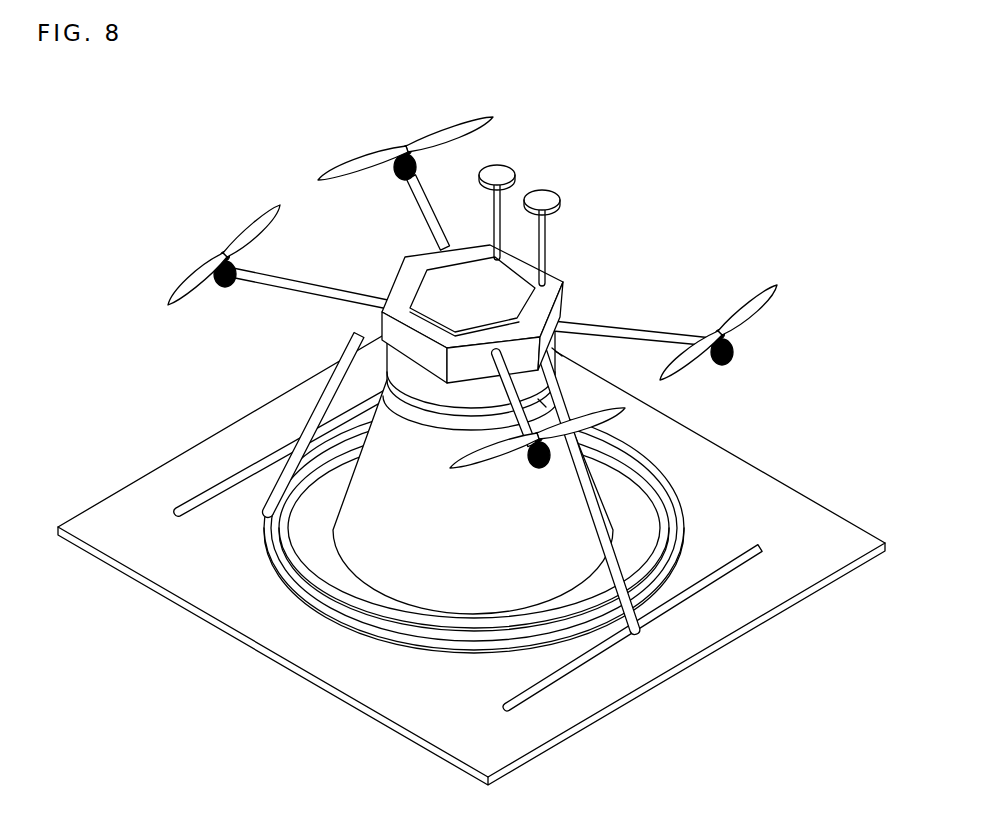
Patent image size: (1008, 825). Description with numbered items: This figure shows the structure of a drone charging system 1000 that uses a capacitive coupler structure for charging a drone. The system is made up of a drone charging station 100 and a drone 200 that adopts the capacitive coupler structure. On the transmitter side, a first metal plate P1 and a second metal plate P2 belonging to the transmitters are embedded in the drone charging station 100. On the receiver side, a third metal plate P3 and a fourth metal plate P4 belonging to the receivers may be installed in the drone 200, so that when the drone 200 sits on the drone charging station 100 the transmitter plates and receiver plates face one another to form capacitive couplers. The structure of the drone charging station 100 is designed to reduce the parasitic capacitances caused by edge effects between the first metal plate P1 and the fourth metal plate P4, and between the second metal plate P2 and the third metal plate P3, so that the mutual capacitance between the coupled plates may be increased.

The drone charging system 1000 is at (503, 104).
The drone 200 is at (383, 453).
The drone charging station 100 is at (425, 722).
The first metal plate P1 is at (337, 618).
The third metal plate P3 is at (293, 565).
The second metal plate P2 is at (542, 403).
The fourth metal plate P4 is at (557, 352).